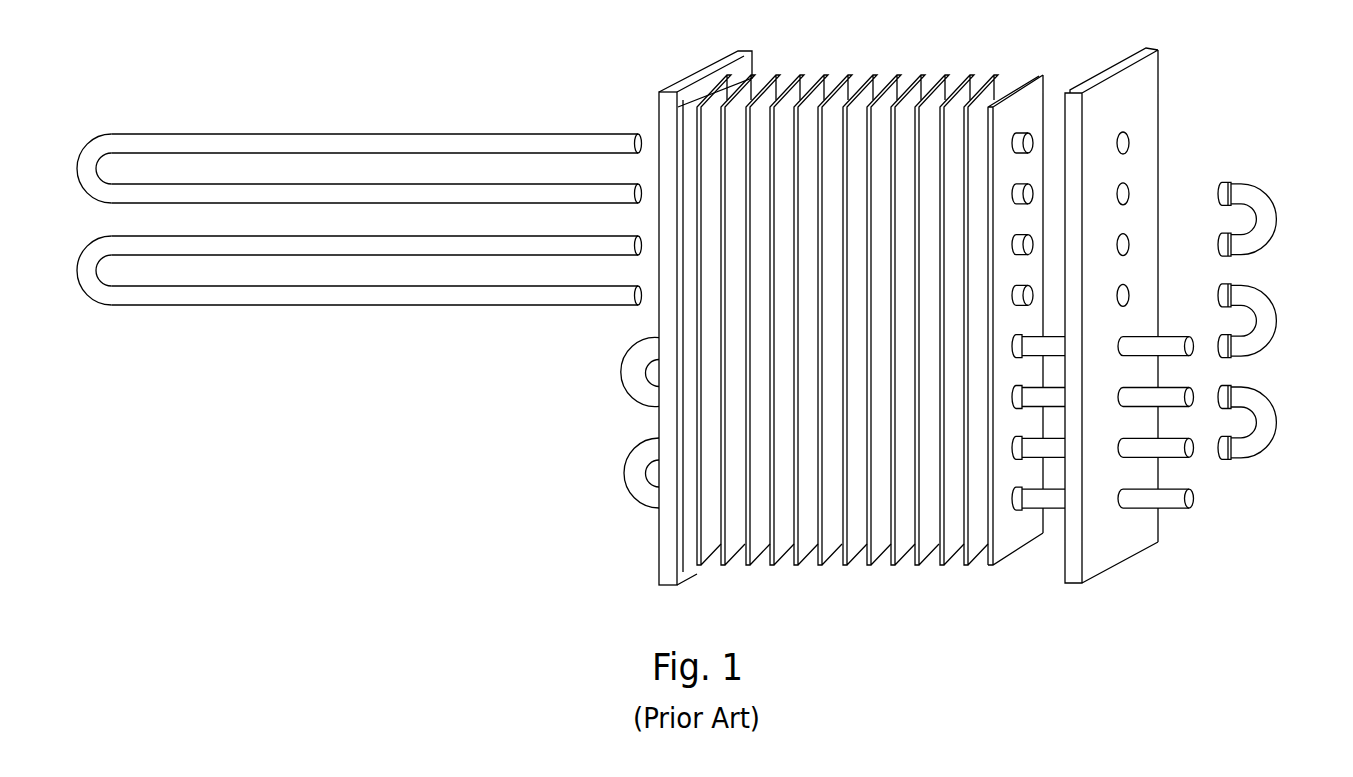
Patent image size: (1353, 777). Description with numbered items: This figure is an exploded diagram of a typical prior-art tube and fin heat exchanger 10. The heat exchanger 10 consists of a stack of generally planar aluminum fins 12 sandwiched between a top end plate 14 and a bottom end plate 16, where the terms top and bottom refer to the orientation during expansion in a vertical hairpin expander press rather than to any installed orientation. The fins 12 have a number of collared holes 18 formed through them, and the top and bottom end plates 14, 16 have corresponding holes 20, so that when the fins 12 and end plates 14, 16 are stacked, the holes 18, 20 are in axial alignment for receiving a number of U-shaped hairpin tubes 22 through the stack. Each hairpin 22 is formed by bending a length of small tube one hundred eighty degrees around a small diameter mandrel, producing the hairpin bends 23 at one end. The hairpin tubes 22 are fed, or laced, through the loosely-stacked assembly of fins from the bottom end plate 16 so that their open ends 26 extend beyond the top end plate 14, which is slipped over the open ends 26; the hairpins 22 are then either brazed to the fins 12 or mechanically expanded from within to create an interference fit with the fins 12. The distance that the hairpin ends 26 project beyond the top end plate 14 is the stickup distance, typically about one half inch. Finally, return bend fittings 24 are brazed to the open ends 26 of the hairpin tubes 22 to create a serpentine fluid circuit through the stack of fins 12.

The tube and fin heat exchanger 10 is at (316, 510).
The fins 12 is at (875, 563).
The top end plate 14 is at (1113, 66).
The bottom end plate 16 is at (688, 80).
The collared holes 18 is at (1020, 132).
The holes 20 is at (1130, 142).
The hairpin tubes 22 is at (475, 306).
The hairpin bends 23 is at (86, 296).
The return bend fittings 24 is at (1274, 440).
The open ends 26 is at (1194, 504).